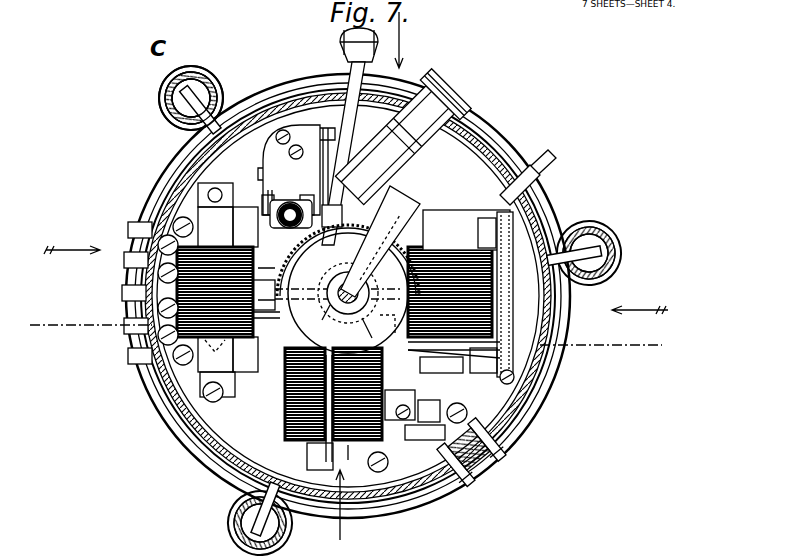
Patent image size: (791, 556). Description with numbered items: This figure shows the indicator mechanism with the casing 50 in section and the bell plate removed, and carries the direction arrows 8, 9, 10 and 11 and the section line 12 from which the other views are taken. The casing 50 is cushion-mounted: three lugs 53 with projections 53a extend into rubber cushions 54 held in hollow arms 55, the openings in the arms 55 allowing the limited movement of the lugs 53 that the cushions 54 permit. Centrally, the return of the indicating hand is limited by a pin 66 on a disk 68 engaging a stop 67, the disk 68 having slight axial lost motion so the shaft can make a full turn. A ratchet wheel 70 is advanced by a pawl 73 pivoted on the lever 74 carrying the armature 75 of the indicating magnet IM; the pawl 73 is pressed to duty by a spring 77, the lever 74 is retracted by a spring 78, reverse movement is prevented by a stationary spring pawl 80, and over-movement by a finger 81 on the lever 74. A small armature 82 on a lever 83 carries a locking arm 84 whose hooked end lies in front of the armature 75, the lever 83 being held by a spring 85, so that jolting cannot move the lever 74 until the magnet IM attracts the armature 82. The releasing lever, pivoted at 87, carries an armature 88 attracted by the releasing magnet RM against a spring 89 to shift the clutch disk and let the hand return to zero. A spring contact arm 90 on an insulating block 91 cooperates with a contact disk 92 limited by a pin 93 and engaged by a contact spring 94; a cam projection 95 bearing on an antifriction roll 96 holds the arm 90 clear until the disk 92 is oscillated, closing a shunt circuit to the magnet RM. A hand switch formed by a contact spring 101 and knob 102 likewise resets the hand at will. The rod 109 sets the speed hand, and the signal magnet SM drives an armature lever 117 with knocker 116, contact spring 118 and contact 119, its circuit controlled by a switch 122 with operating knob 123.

The arrow 8 is at (344, 505).
The arrow 9 is at (640, 302).
The arrow 10 is at (408, 40).
The arrow 11 is at (72, 242).
The section line 12 is at (337, 337).
The casing 50 is at (548, 216).
The lug 53 is at (216, 90).
The projection 53a is at (205, 92).
The cushion 54 is at (178, 112).
The hollow arm 55 is at (162, 100).
The pin 66 is at (345, 272).
The stop 67 is at (375, 255).
The disk 68 is at (350, 315).
The ratchet wheel 70 is at (342, 260).
The pawl 73 is at (384, 325).
The lever 74 is at (400, 403).
The armature 75 is at (454, 357).
The spring 77 is at (470, 420).
The spring 78 is at (505, 340).
The stationary spring pawl 80 is at (337, 206).
The finger 81 is at (372, 336).
The armature 82 is at (500, 356).
The lever 83 is at (505, 285).
The locking arm 84 is at (420, 420).
The spring 85 is at (478, 228).
The pivot 87 is at (292, 342).
The armature 88 is at (290, 315).
The spring 89 is at (288, 290).
The spring contact arm 90 is at (265, 195).
The block 91 is at (296, 170).
The contact disk 92 is at (290, 240).
The pin 93 is at (305, 197).
The contact spring 94 is at (318, 172).
The cam projection 95 is at (276, 196).
The antifriction roll 96 is at (262, 212).
The contact spring 101 is at (536, 183).
The knob 102 is at (548, 163).
The rod 109 is at (351, 62).
The knocker 116 is at (325, 322).
The armature lever 117 is at (362, 452).
The contact spring 118 is at (307, 456).
The contact 119 is at (371, 462).
The switch 122 is at (415, 135).
The operating knob 123 is at (459, 89).
The releasing electromagnet RM is at (177, 297).
The indicating electromagnet IM is at (492, 318).
The signal electromagnet SM is at (326, 405).